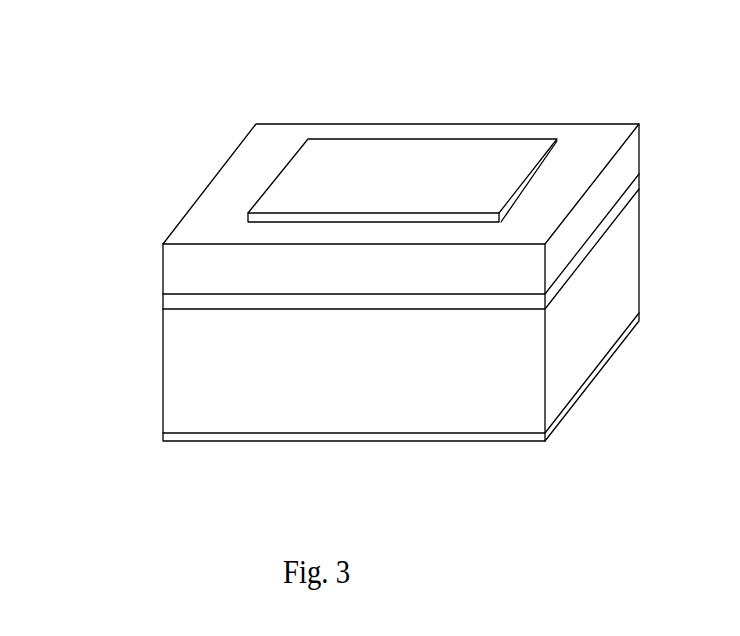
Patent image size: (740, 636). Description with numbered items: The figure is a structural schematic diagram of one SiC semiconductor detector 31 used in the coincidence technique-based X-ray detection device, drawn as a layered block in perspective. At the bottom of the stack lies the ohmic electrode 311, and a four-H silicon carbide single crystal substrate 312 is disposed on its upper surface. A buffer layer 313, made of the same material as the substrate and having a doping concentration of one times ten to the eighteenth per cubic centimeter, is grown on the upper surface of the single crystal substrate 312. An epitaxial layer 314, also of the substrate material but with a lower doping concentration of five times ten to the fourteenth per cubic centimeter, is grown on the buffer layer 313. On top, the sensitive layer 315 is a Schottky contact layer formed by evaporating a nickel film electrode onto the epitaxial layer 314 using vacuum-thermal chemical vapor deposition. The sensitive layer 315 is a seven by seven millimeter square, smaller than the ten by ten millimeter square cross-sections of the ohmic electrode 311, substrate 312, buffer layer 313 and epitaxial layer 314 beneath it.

The SiC semiconductor detector 31 is at (70, 70).
The ohmic electrode 311 is at (335, 435).
The 4H-SiC single crystal substrate 312 is at (218, 361).
The buffer layer 313 is at (476, 301).
The epitaxial layer 314 is at (238, 268).
The sensitive layer 315 is at (402, 177).